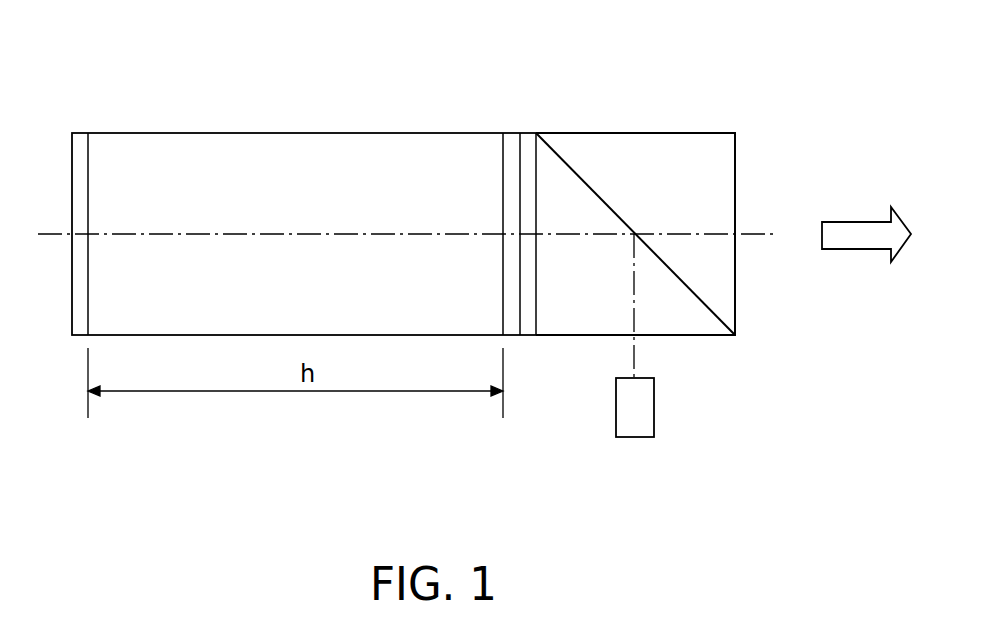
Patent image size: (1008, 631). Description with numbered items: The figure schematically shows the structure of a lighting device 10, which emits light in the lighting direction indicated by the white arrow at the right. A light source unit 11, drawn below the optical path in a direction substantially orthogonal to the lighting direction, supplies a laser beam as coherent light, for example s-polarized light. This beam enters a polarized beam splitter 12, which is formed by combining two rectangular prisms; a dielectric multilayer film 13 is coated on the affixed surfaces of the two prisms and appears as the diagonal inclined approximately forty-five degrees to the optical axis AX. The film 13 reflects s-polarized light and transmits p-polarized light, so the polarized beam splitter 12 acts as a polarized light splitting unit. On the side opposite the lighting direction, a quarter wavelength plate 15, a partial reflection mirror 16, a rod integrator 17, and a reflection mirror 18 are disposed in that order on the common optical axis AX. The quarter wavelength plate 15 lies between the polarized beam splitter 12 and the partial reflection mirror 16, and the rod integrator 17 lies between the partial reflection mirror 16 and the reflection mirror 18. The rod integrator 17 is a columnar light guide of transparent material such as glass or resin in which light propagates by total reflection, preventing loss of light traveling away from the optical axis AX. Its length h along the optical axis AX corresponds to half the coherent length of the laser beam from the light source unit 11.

The lighting device 10 is at (218, 100).
The light source unit 11 is at (638, 438).
The polarized beam splitter 12 is at (715, 148).
The dielectric multilayer film 13 is at (718, 316).
The ¼ wavelength plate 15 is at (530, 148).
The partial reflection mirror 16 is at (512, 148).
The rod integrator 17 is at (400, 150).
The reflection mirror 18 is at (80, 150).
The optical axis AX is at (55, 232).